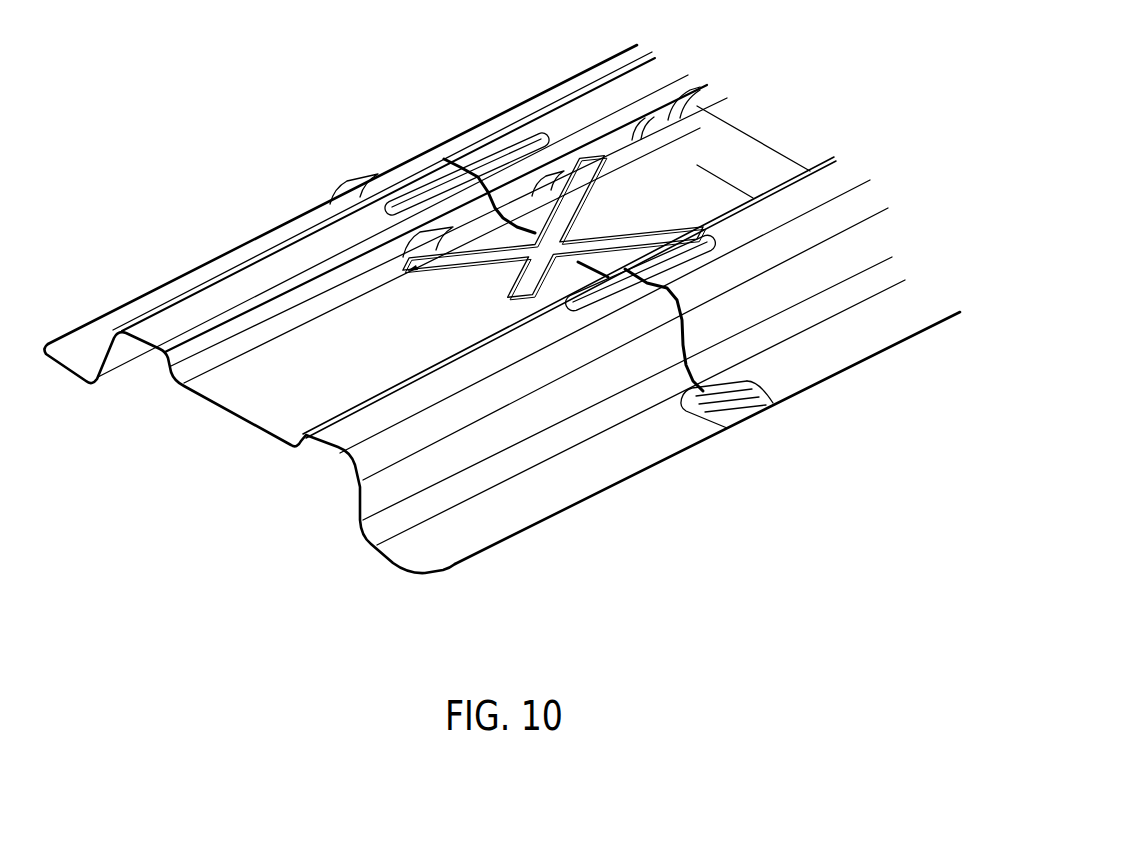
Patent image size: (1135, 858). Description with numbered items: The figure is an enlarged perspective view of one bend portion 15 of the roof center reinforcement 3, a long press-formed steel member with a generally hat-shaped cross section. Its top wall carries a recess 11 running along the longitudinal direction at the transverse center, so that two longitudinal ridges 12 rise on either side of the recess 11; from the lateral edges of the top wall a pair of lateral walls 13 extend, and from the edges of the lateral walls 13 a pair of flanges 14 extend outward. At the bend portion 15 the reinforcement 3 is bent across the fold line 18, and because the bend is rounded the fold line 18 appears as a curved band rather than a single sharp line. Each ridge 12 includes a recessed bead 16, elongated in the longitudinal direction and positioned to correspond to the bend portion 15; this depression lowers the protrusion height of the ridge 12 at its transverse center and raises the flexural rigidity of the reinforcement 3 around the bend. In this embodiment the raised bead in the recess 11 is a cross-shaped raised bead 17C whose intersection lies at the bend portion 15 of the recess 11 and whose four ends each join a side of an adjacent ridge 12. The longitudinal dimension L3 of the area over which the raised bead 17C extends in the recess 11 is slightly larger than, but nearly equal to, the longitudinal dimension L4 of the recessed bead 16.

The roof center reinforcement 3 is at (328, 140).
The recess 11 is at (240, 402).
The ridge 12 is at (256, 287).
The lateral wall 13 is at (113, 350).
The flange 14 is at (134, 310).
The bend portion 15 is at (767, 431).
The recessed bead 16 is at (521, 132).
The cross-shaped raised bead 17C is at (528, 287).
The fold line 18 is at (690, 330).
The longitudinal dimension of the raised bead area L3 is at (485, 226).
The longitudinal dimension of the recessed bead L4 is at (482, 163).